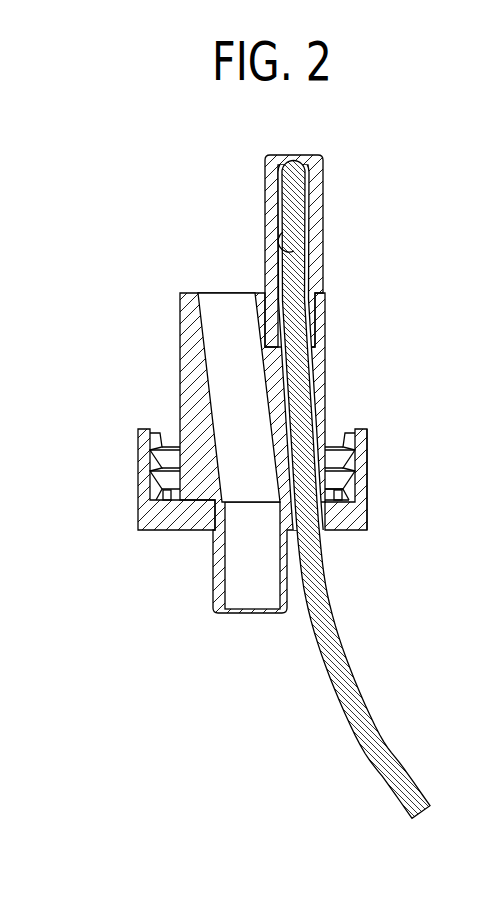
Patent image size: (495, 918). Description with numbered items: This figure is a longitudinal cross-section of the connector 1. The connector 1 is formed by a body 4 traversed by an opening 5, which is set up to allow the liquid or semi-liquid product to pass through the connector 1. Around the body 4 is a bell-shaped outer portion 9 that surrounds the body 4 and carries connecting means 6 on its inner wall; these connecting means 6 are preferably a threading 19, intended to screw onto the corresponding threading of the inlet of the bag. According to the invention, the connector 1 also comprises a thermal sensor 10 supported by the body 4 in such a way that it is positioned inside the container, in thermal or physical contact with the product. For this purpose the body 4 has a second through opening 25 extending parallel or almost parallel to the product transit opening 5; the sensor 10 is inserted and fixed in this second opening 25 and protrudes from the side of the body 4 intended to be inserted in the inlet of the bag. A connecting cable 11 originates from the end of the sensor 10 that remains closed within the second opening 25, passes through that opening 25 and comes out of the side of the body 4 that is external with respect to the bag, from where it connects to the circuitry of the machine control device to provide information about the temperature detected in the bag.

The connector 1 is at (376, 466).
The body 4 is at (188, 375).
The opening 5 is at (237, 310).
The connecting means 6 is at (333, 440).
The bell-shaped outer portion 9 is at (355, 517).
The thermal sensor 10 is at (297, 212).
The connecting cable 11 is at (352, 698).
The threading 19 is at (337, 491).
The second through opening 25 is at (283, 255).